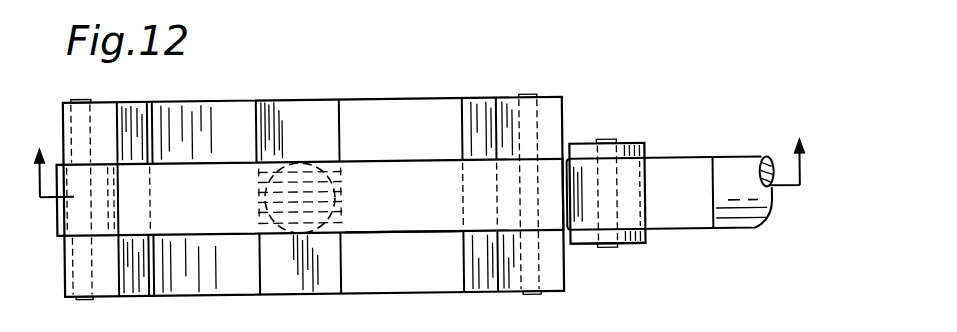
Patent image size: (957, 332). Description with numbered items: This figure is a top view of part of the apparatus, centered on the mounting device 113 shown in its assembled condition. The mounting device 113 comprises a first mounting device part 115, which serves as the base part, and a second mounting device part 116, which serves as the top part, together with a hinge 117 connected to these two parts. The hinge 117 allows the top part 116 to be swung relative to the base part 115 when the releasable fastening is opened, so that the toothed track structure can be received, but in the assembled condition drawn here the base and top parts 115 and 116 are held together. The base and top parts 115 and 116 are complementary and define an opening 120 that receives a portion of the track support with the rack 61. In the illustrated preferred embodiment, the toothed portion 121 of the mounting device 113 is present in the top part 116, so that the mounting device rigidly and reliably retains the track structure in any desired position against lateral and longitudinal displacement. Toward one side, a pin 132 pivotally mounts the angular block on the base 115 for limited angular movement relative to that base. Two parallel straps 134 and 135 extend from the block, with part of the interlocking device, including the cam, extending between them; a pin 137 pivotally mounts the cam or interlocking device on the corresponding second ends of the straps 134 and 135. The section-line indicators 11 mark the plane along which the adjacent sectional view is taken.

The section line 11 is at (25, 134).
The rack 61 is at (715, 325).
The mounting device 113 is at (409, 96).
The first mounting device part 115 is at (192, 297).
The second mounting device part 116 is at (220, 175).
The hinge 117 is at (85, 298).
The opening 120 is at (397, 281).
The toothed portion 121 is at (325, 193).
The pin 132 is at (527, 94).
The strap 134 is at (625, 146).
The strap 135 is at (625, 248).
The pin 137 is at (609, 254).